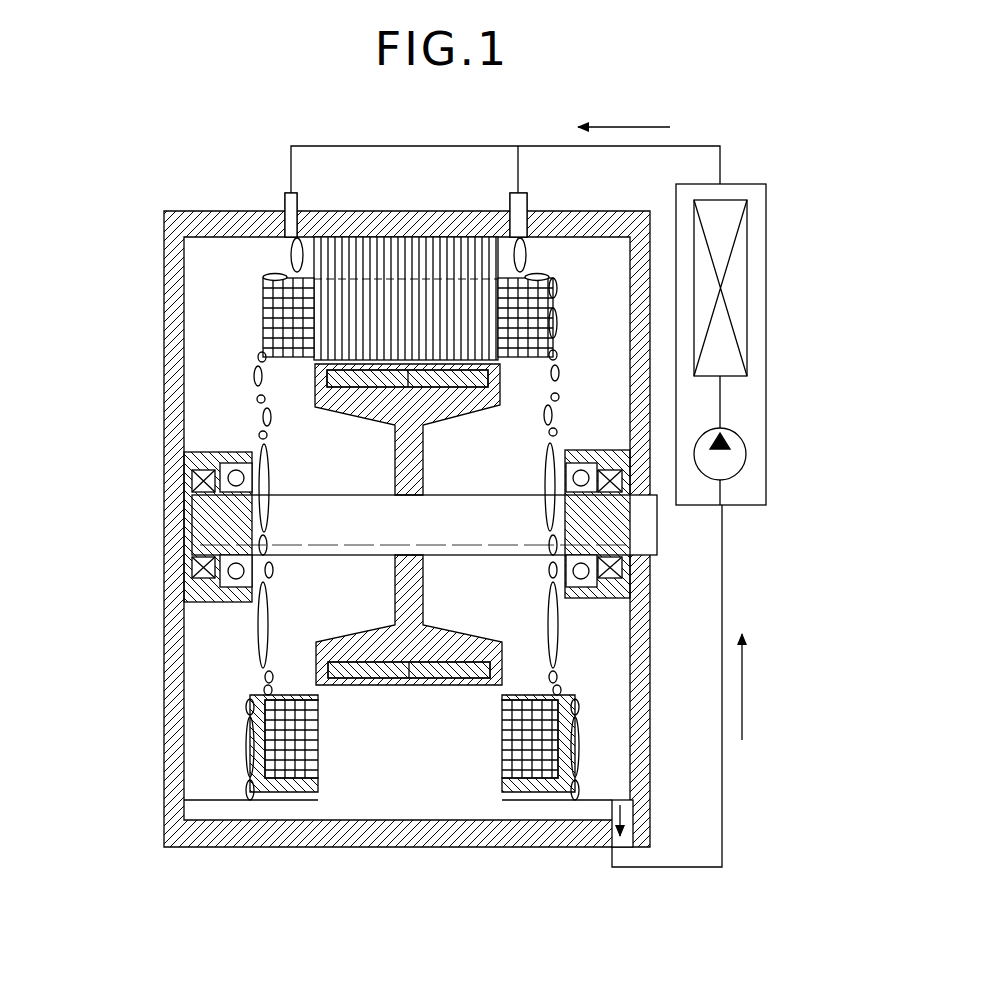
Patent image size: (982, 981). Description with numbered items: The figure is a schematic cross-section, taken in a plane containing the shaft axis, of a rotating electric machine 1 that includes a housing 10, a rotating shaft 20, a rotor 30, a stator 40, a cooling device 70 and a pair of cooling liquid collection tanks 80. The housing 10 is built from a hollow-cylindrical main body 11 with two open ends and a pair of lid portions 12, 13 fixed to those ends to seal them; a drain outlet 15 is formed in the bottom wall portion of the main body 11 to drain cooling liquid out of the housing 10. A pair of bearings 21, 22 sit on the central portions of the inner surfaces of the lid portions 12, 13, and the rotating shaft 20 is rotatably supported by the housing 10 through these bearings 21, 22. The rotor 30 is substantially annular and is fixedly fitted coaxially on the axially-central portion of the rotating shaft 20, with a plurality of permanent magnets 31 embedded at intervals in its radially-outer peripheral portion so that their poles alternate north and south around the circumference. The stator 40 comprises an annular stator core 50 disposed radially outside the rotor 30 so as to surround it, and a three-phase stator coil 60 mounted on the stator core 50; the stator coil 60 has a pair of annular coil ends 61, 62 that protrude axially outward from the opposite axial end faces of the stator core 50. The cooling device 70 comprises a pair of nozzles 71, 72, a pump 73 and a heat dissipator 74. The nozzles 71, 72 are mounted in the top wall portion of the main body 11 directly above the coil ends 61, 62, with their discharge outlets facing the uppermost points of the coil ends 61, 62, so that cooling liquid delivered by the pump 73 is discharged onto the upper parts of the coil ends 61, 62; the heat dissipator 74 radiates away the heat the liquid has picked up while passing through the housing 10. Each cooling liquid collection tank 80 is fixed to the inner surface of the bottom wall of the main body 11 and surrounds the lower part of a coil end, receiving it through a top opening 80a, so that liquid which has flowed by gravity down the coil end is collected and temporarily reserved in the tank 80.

The rotating electric machine 1 is at (168, 170).
The housing 10 is at (162, 242).
The main body 11 is at (405, 848).
The lid portion 12 is at (165, 818).
The lid portion 13 is at (652, 773).
The drain outlet 15 is at (612, 847).
The rotating shaft 20 is at (205, 523).
The bearing 21 is at (222, 604).
The bearing 22 is at (598, 602).
The rotor 30 is at (355, 423).
The permanent magnets 31 is at (340, 381).
The stator 40 is at (82, 346).
The stator core 50 is at (300, 258).
The stator coil 60 is at (258, 300).
The coil end 61 is at (262, 337).
The coil end 62 is at (532, 320).
The cooling device 70 is at (770, 405).
The nozzle 71 is at (285, 205).
The nozzle 72 is at (528, 207).
The pump 73 is at (747, 455).
The heat dissipator 74 is at (748, 255).
The cooling liquid collection tank 80 is at (252, 712).
The top opening 80a is at (285, 688).